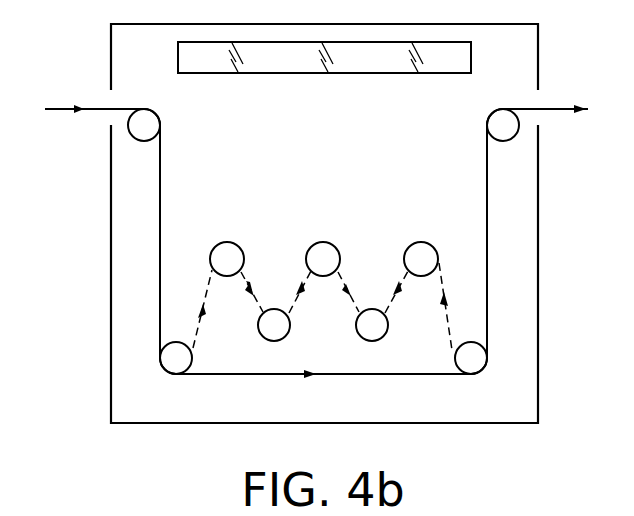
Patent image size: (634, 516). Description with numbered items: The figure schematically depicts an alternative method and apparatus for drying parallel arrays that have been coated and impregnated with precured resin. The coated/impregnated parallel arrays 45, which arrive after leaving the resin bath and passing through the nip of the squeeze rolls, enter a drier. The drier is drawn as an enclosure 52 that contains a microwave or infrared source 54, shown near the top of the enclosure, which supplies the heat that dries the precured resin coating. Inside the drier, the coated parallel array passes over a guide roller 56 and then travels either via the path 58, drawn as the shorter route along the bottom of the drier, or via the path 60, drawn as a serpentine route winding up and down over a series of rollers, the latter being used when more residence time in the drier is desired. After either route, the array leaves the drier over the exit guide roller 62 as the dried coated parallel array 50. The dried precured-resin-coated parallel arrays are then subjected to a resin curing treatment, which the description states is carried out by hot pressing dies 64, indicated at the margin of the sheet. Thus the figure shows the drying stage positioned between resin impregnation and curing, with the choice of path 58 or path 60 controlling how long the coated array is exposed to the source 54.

The coated/impregnated parallel arrays 45 is at (62, 107).
The dried coated parallel array 50 is at (559, 107).
The housing 52 is at (538, 302).
The microwave or infrared source 54 is at (320, 76).
The guide roller 56 is at (145, 142).
The path 58 is at (362, 375).
The path 60 is at (291, 314).
The exit guide roller 62 is at (505, 142).
The hot pressing dies 64 is at (626, 512).